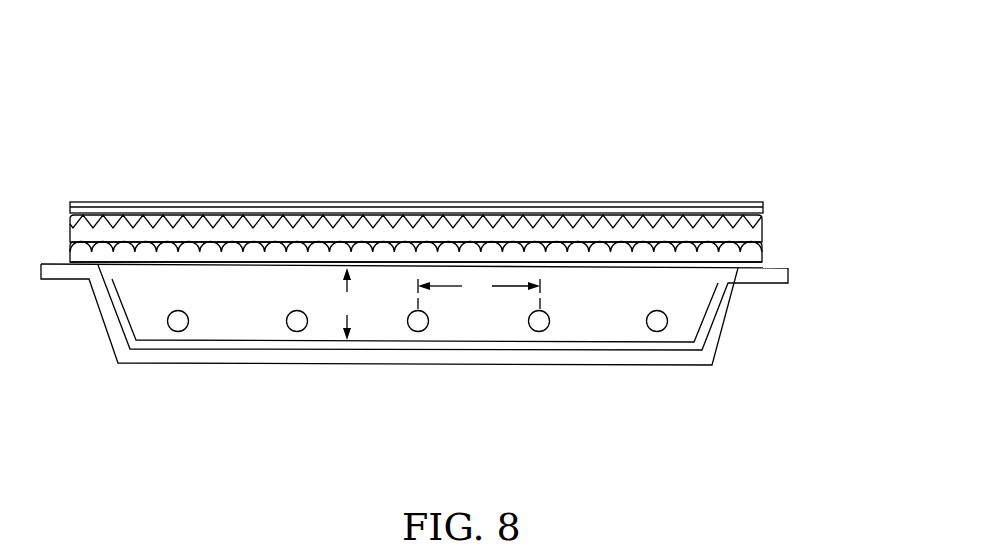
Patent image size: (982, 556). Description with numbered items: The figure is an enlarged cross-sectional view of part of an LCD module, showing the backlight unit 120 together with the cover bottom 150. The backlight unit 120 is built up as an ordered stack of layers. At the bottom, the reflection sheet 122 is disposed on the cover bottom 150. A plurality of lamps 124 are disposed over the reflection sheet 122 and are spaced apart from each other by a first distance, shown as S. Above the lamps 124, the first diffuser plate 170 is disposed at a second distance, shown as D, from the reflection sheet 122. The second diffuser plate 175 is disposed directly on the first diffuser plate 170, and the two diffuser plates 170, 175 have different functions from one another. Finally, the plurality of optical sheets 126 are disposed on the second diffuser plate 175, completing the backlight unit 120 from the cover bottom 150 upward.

The backlight unit 120 is at (693, 137).
The reflection sheet 122 is at (468, 345).
The lamps 124 is at (653, 325).
The optical sheets 126 is at (765, 202).
The cover bottom 150 is at (677, 358).
The first diffuser plate 170 is at (762, 262).
The second diffuser plate 175 is at (762, 238).